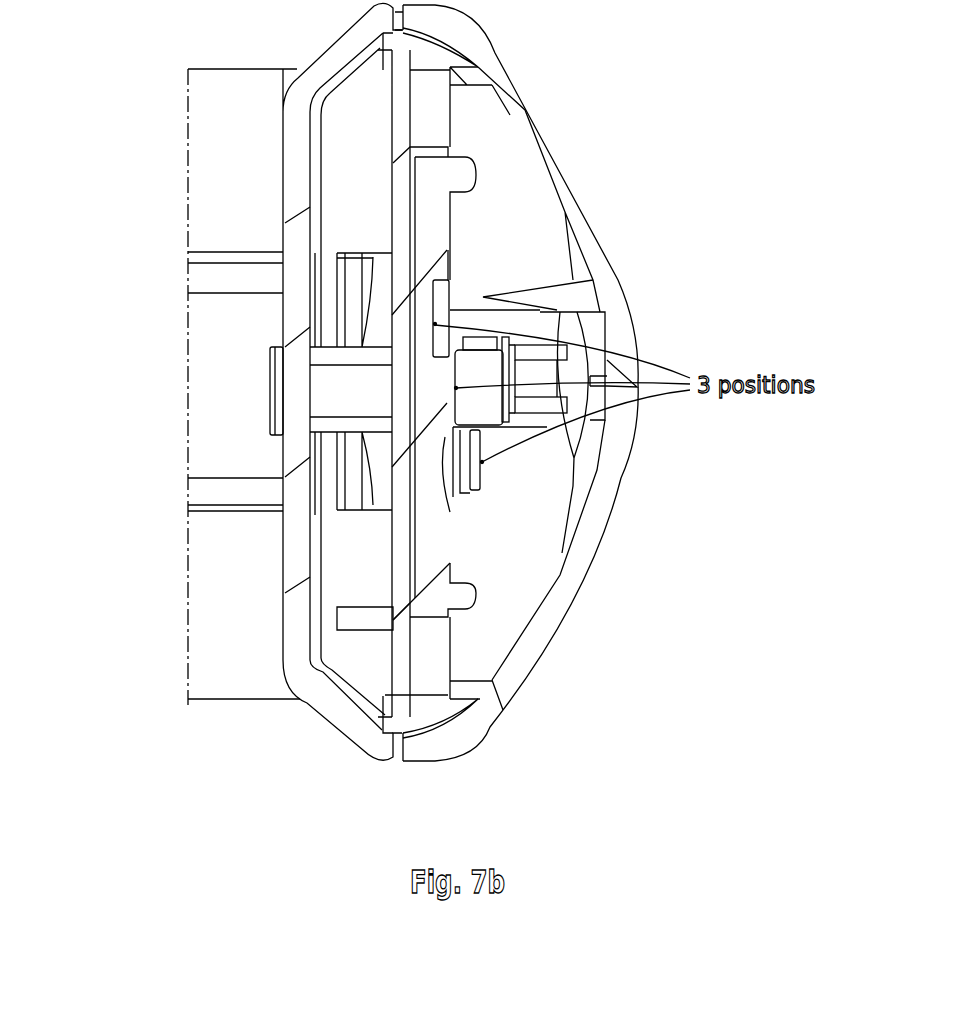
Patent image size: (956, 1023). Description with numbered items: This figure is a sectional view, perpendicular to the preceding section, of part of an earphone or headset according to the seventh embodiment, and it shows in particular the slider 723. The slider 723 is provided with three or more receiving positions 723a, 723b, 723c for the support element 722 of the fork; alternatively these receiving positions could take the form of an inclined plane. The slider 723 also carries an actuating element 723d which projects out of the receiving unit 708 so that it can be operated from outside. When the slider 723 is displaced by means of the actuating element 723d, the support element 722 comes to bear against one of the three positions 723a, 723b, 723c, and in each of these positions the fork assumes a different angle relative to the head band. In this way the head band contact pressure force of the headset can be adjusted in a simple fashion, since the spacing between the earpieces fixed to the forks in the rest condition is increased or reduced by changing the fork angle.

The receiving unit 708 is at (603, 270).
The support element 722 is at (470, 528).
The slider 723 is at (433, 212).
The first receiving position 723a is at (433, 305).
The second receiving position 723b is at (452, 371).
The third receiving position 723c is at (482, 462).
The actuating element 723d is at (272, 350).